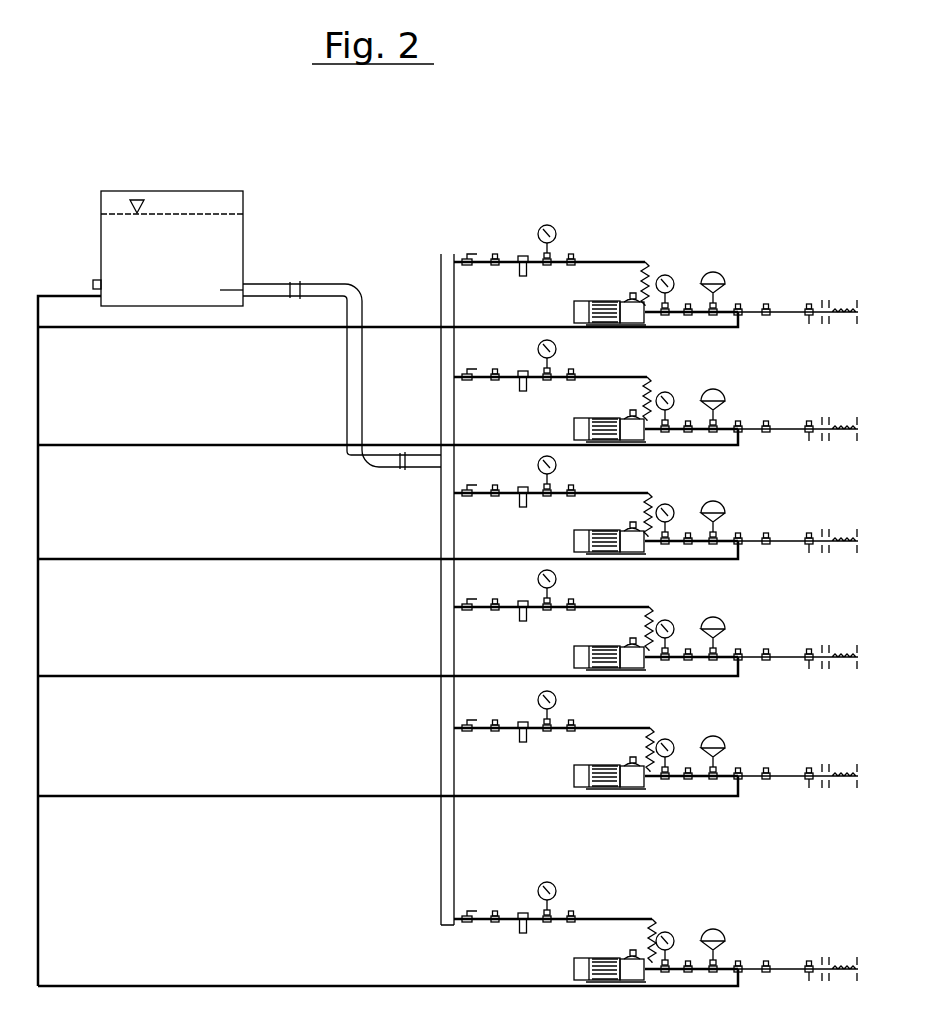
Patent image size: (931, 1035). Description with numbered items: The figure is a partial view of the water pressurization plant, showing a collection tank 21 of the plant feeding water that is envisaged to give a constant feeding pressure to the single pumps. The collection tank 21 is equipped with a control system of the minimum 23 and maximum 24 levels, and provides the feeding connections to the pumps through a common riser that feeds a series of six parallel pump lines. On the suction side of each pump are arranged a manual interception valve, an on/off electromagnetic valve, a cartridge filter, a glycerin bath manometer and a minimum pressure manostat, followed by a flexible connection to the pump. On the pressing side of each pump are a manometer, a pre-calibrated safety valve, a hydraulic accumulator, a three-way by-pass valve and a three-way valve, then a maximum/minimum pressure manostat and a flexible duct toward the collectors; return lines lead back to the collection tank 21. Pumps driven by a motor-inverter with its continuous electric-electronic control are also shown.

The collection tank 21 is at (233, 250).
The minimum level control 23 is at (93, 280).
The maximum level control 24 is at (148, 185).